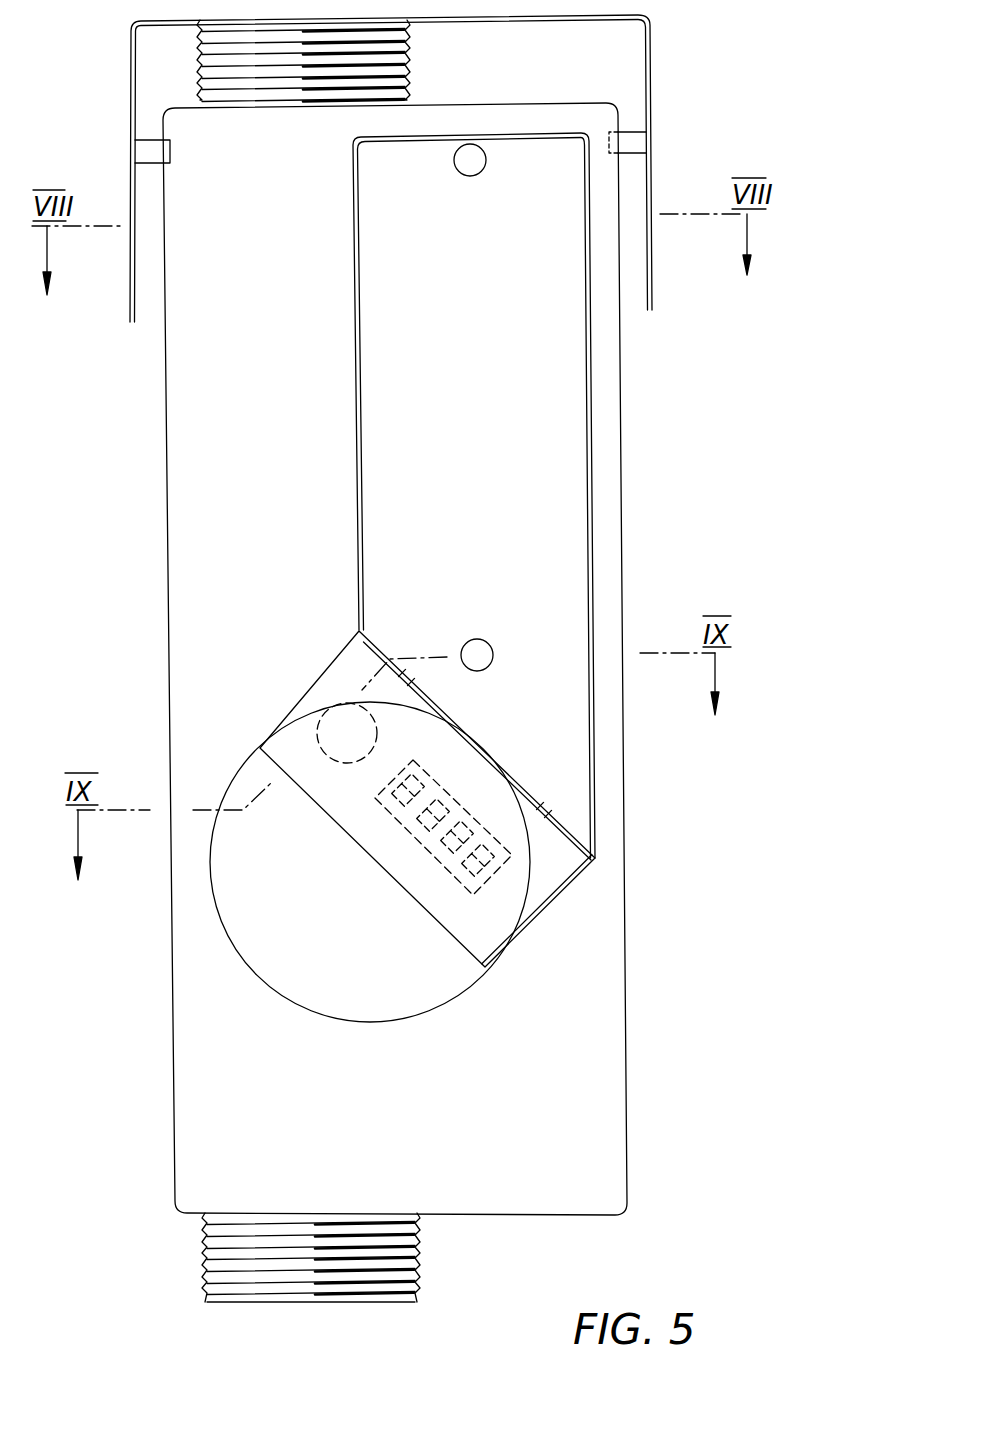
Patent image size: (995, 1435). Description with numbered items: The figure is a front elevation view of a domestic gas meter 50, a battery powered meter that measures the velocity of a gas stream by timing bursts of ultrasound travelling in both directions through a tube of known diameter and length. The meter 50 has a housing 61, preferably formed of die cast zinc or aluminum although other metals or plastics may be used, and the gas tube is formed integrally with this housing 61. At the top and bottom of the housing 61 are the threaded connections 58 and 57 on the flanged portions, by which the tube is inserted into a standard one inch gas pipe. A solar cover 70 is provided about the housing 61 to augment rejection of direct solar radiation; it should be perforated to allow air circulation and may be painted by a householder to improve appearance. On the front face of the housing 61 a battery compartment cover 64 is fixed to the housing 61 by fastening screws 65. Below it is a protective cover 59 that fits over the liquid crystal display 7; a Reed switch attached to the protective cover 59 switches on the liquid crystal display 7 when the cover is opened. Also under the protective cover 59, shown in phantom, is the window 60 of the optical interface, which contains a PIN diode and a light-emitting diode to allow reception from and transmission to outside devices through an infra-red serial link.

The domestic gas meter 50 is at (725, 852).
The solar cover 70 is at (652, 117).
The threaded connection 58 is at (405, 80).
The threaded connection 57 is at (418, 1270).
The housing 61 is at (622, 568).
The battery compartment cover 64 is at (589, 395).
The fastening screws 65 is at (463, 172).
The protective cover 59 is at (255, 975).
The window 60 is at (340, 762).
The liquid crystal display 7 is at (483, 885).